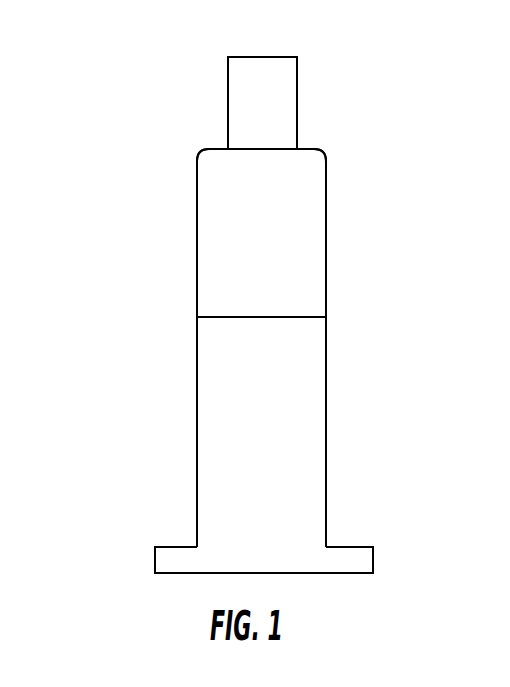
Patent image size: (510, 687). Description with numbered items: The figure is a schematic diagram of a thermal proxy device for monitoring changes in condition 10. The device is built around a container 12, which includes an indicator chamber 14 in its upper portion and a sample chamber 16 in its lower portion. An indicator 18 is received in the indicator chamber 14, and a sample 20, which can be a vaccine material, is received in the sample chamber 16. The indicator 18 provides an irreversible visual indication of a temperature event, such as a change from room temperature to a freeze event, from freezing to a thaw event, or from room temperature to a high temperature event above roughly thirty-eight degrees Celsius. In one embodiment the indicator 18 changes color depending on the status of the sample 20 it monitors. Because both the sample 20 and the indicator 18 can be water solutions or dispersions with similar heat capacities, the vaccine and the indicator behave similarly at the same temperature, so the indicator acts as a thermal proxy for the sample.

The thermal proxy device for monitoring changes in condition 10 is at (62, 34).
The container 12 is at (326, 182).
The indicator chamber 14 is at (310, 242).
The sample chamber 16 is at (310, 387).
The indicator 18 is at (222, 245).
The sample 20 is at (222, 425).